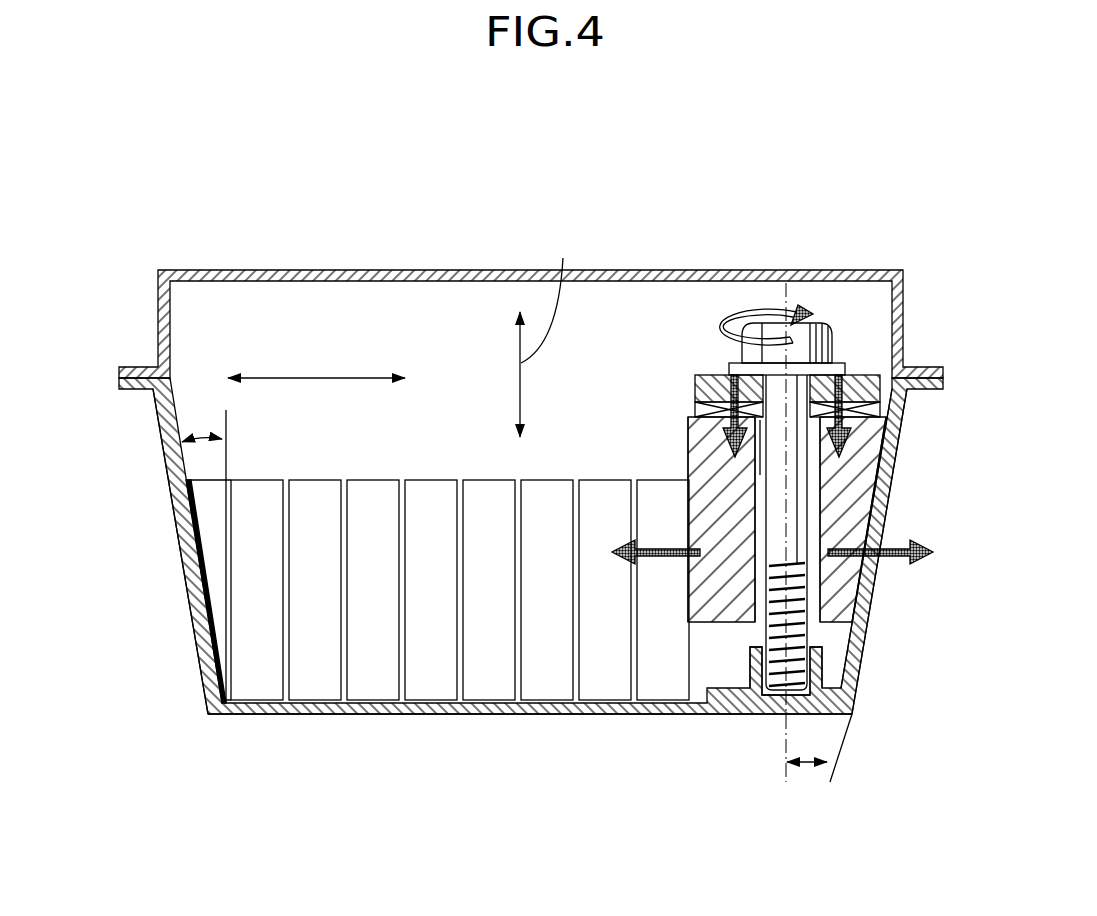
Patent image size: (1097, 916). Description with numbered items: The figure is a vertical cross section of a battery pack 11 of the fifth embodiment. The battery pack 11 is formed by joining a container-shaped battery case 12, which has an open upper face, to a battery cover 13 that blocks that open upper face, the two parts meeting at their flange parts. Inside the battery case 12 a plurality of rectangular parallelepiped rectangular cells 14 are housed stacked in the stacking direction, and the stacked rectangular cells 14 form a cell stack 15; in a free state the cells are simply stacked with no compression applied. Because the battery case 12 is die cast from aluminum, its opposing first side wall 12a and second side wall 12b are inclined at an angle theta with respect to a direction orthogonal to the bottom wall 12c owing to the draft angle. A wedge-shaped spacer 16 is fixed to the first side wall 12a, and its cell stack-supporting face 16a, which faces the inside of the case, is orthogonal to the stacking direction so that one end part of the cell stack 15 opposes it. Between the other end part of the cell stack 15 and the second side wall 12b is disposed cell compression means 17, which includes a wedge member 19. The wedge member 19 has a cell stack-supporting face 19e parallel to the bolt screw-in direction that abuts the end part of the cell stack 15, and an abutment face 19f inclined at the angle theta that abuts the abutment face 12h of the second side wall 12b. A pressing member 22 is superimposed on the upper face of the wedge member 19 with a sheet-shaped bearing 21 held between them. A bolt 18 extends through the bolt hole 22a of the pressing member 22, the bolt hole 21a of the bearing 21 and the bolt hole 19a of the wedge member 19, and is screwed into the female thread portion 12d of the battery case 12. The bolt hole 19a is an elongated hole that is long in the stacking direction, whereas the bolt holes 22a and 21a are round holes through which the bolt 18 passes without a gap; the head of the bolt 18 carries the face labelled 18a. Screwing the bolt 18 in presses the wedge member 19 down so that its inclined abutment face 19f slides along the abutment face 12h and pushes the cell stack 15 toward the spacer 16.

The battery pack 11 is at (376, 243).
The battery case 12 is at (175, 540).
The first side wall 12a is at (196, 650).
The second side wall 12b is at (869, 617).
The bottom wall 12c is at (483, 716).
The female thread portion 12d is at (772, 692).
The abutment face 12h is at (856, 588).
The battery cover 13 is at (295, 269).
The rectangular cell 14 is at (271, 636).
The cell stack 15 is at (460, 516).
The spacer 16 is at (199, 580).
The cell stack-supporting face 16a is at (228, 521).
The cell compression means 17 is at (707, 312).
The bolt 18 is at (838, 341).
The head engagement face 18a is at (827, 337).
The wedge member 19 is at (684, 444).
The bolt hole 19a is at (838, 465).
The cell stack-supporting face 19e is at (688, 470).
The abutment face 19f is at (873, 500).
The bearing 21 is at (686, 405).
The bolt hole 21a is at (727, 519).
The pressing member 22 is at (871, 366).
The bolt hole 22a is at (760, 473).